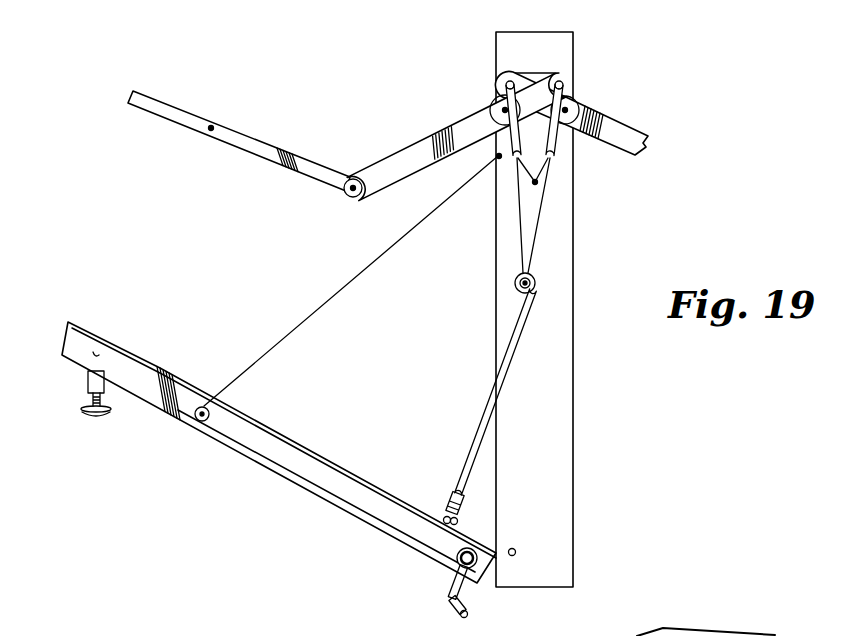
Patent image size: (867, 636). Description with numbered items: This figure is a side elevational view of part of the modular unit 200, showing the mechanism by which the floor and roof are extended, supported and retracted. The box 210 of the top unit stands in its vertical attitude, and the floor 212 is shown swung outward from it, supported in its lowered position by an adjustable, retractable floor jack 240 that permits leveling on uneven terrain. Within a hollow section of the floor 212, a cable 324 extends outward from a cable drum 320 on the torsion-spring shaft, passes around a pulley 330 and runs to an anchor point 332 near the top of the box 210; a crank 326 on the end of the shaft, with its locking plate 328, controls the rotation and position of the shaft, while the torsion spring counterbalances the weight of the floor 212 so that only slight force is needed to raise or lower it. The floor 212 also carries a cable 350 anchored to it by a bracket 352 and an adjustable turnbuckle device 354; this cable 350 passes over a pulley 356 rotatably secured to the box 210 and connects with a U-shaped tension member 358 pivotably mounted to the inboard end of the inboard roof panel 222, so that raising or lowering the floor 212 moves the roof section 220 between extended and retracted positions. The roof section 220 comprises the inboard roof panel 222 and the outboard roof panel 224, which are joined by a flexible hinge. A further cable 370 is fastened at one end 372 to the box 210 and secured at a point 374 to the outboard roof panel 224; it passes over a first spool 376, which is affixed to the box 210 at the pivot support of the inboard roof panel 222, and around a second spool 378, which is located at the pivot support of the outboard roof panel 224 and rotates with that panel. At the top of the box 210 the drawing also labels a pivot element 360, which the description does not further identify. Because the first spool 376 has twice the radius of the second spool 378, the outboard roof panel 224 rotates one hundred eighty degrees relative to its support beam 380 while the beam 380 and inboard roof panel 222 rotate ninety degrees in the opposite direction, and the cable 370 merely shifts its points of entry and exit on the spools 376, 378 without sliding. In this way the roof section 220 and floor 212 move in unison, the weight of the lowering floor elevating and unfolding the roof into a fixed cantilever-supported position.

The modular unit 200 is at (788, 620).
The box 210 is at (573, 396).
The floor section 212 is at (256, 470).
The roof section 220 is at (353, 86).
The inboard roof panel 222 is at (460, 122).
The outboard roof panel 224 is at (150, 94).
The floor jack 240 is at (98, 415).
The cable drum 320 is at (447, 566).
The cable 324 is at (341, 288).
The crank 326 is at (456, 614).
The locking plate 328 is at (481, 566).
The pulley 330 is at (196, 414).
The anchor point 332 is at (498, 159).
The cable 350 is at (509, 350).
The bracket 352 is at (437, 515).
The adjustable turnbuckle device 354 is at (463, 507).
The pulley 356 is at (514, 284).
The U-shaped tension member 358 is at (565, 152).
The roller pin 360 is at (506, 72).
The cable 370 is at (398, 154).
The end 372 is at (537, 185).
The point 374 is at (210, 126).
The first spool 376 is at (497, 116).
The second spool 378 is at (352, 198).
The beam 380 is at (421, 168).